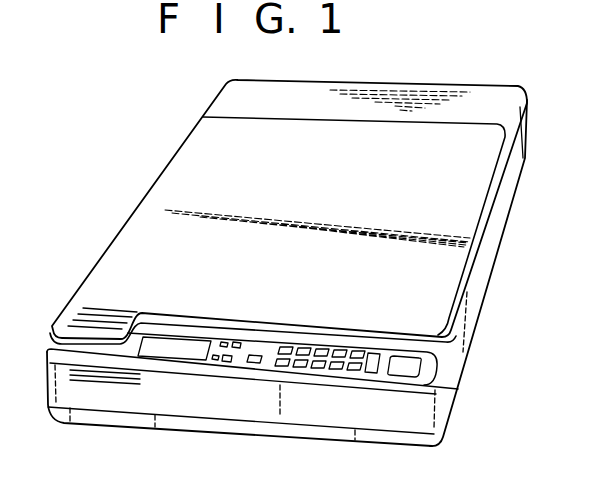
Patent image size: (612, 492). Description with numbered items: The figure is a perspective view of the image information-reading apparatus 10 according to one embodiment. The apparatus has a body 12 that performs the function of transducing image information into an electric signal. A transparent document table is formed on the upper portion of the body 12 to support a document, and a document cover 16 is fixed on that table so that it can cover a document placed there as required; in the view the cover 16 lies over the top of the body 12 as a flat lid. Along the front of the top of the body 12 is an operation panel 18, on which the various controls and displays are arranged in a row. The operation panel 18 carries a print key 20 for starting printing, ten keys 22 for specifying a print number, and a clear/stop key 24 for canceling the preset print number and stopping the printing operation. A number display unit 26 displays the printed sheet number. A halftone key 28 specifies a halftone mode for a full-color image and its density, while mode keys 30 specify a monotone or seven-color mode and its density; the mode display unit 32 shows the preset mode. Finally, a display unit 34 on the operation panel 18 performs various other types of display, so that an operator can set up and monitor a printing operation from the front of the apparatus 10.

The image information-reading apparatus 10 is at (500, 251).
The body 12 is at (478, 302).
The document cover 16 is at (136, 236).
The operation panel 18 is at (432, 368).
The print key 20 is at (407, 369).
The ten keys 22 is at (317, 348).
The clear/stop key 24 is at (379, 356).
The number display unit 26 is at (254, 363).
The halftone key 28 is at (241, 346).
The mode keys 30 is at (227, 362).
The mode display unit 32 is at (224, 343).
The display unit 34 is at (176, 349).